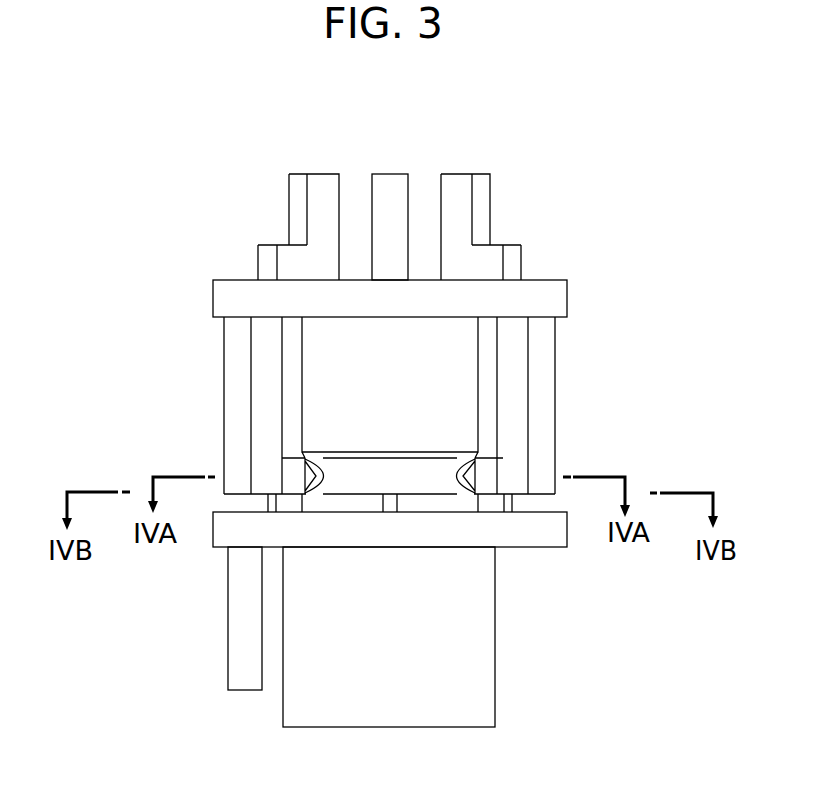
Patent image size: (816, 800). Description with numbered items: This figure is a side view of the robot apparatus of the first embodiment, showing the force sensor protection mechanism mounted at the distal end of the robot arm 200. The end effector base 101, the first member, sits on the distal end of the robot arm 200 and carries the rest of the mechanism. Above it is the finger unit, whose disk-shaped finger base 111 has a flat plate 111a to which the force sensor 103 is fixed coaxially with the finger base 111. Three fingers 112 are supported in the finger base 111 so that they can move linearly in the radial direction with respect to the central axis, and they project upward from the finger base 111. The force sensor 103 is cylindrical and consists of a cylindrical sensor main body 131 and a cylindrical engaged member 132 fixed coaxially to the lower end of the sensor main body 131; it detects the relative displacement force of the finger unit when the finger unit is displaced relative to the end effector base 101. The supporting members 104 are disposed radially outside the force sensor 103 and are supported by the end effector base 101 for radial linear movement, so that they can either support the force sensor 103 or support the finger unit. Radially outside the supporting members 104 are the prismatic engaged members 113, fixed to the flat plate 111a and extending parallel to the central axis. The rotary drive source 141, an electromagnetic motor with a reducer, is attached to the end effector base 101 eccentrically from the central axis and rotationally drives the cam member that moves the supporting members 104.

The end effector base 101 is at (550, 537).
The force sensor 103 is at (135, 302).
The supporting members 104 is at (488, 468).
The finger base 111 is at (550, 287).
The flat plate 111a is at (517, 318).
The fingers 112 is at (300, 180).
The engaged members 113 is at (545, 365).
The sensor main body 131 is at (322, 343).
The engaged member 132 is at (338, 465).
The rotary drive source 141 is at (243, 623).
The robot arm 200 is at (487, 608).